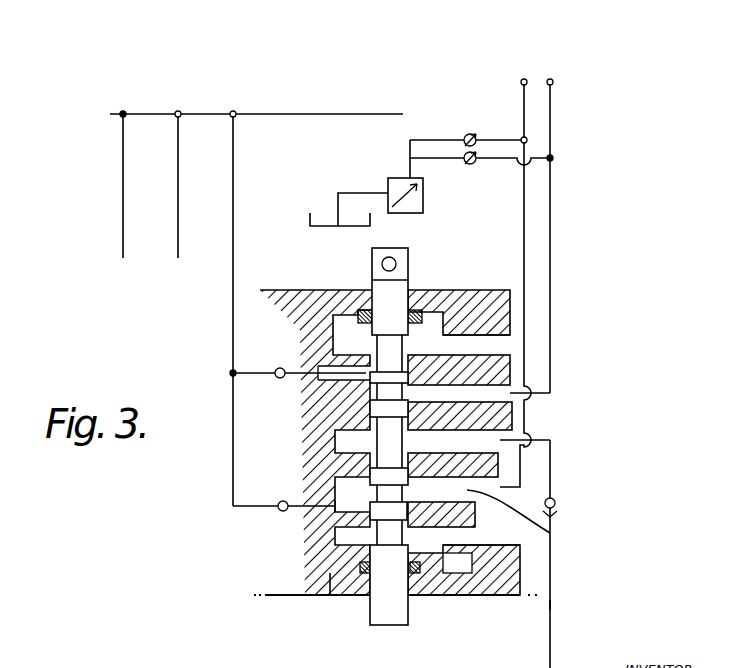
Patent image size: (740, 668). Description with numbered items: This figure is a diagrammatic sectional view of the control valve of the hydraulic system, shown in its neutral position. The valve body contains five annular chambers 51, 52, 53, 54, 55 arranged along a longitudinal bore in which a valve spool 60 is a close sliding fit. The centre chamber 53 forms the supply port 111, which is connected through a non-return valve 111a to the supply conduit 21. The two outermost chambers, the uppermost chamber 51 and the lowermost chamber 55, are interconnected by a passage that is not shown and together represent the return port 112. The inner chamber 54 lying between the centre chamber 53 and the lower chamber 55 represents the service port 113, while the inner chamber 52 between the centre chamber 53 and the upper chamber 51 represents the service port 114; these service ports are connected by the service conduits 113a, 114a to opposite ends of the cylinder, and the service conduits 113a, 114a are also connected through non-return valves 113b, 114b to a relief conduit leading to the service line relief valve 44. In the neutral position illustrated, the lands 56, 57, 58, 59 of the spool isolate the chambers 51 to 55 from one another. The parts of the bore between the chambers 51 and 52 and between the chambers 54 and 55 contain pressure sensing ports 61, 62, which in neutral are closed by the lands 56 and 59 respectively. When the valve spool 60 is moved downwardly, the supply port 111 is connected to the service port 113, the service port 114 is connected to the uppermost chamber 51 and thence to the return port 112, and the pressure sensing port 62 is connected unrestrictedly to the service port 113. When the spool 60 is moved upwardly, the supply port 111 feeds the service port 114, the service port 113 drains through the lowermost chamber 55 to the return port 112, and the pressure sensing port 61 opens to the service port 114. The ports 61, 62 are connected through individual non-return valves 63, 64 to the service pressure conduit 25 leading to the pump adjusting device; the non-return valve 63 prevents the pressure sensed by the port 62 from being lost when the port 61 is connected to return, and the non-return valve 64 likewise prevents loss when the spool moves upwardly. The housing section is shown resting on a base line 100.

The supply conduit 21 is at (552, 606).
The service pressure conduit 25 is at (156, 113).
The service line relief valve 44 is at (387, 191).
The uppermost annular chamber 51 is at (346, 347).
The upper inner annular chamber 52 is at (340, 381).
The centre annular chamber 53 is at (337, 445).
The lower inner annular chamber 54 is at (337, 487).
The lowermost annular chamber 55 is at (333, 540).
The land 56 is at (393, 372).
The land 57 is at (330, 429).
The land 58 is at (330, 467).
The land 59 is at (383, 510).
The valve spool 60 is at (407, 608).
The pressure sensing port 61 is at (296, 383).
The pressure sensing port 62 is at (327, 517).
The non-return valve 63 is at (276, 370).
The non-return valve 64 is at (278, 509).
The valve housing base 100 is at (287, 606).
The supply port 111 is at (527, 440).
The non-return valve 111a is at (553, 498).
The return port 112 is at (490, 343).
The service port 113 is at (550, 533).
The service conduit 113a is at (522, 102).
The non-return valve 113b is at (465, 136).
The service port 114 is at (527, 393).
The service conduit 114a is at (551, 102).
The non-return valve 114b is at (465, 164).